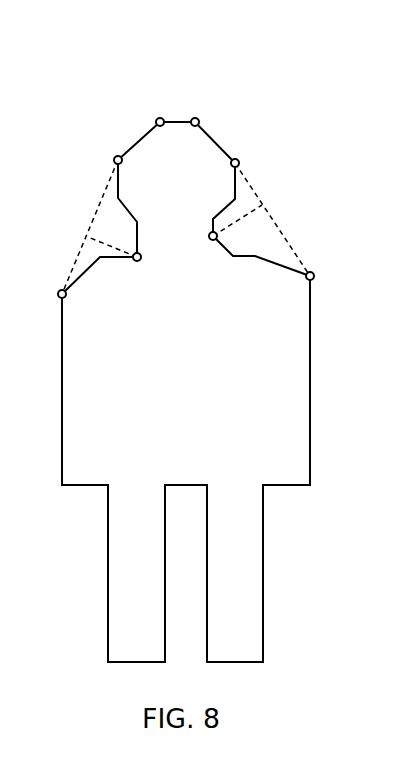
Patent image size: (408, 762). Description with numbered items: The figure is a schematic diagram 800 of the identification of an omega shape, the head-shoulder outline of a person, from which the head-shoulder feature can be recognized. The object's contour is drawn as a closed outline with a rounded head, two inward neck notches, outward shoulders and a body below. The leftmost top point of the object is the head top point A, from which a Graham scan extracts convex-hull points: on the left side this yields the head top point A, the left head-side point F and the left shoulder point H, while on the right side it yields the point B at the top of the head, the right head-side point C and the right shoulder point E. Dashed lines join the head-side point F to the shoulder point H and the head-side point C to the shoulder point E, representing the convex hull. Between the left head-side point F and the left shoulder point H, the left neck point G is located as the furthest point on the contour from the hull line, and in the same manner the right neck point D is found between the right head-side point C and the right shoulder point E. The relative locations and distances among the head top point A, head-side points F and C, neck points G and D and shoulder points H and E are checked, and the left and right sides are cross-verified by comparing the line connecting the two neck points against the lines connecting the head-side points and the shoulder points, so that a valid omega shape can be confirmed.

The schematic diagram 800 is at (263, 71).
The head top point A is at (159, 109).
The right head top point B is at (193, 109).
The right head-side point C is at (247, 155).
The right neck point D is at (202, 237).
The right shoulder point E is at (321, 277).
The left head-side point F is at (108, 155).
The left neck point G is at (146, 258).
The left shoulder point H is at (51, 294).